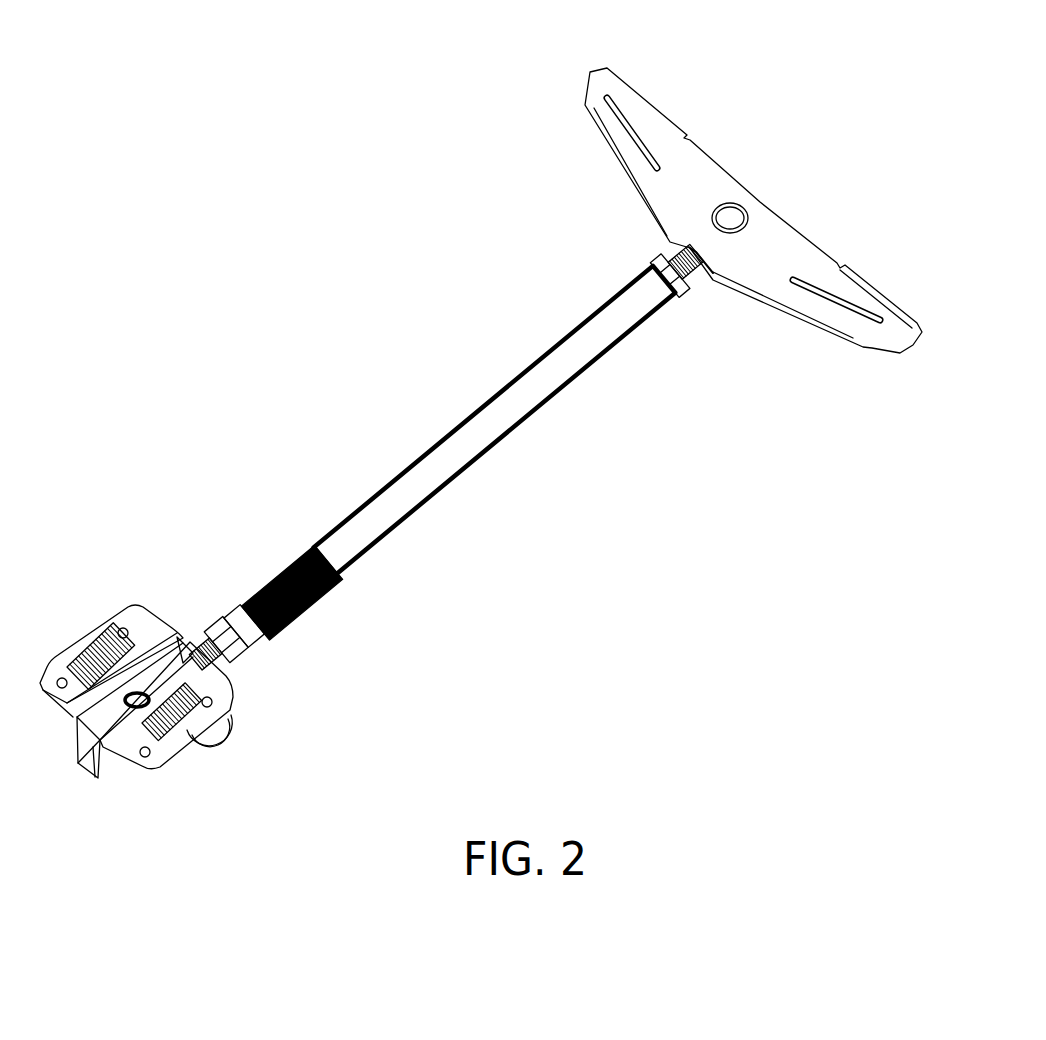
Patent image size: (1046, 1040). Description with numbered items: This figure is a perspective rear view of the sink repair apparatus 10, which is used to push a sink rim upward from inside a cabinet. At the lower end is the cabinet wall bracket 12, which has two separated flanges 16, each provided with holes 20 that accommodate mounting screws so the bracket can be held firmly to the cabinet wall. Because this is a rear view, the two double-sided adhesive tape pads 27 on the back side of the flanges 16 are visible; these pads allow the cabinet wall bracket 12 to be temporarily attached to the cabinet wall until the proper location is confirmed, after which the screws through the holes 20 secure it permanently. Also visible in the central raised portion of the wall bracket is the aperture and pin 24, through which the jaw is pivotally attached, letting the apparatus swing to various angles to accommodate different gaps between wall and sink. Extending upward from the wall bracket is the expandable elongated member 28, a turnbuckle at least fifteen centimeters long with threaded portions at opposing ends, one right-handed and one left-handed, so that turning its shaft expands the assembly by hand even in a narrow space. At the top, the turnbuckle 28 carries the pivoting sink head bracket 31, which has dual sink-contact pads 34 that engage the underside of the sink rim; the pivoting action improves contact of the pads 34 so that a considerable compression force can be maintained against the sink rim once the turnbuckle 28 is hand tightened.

The sink repair apparatus 10 is at (285, 217).
The cabinet wall bracket 12 is at (77, 801).
The flanges 16 is at (178, 740).
The holes 20 is at (215, 701).
The pin 24 is at (125, 702).
The double-sided adhesive tape pads 27 is at (87, 657).
The expandable elongated member 28 is at (533, 407).
The sink head bracket 31 is at (592, 216).
The sink-contact pads 34 is at (873, 283).